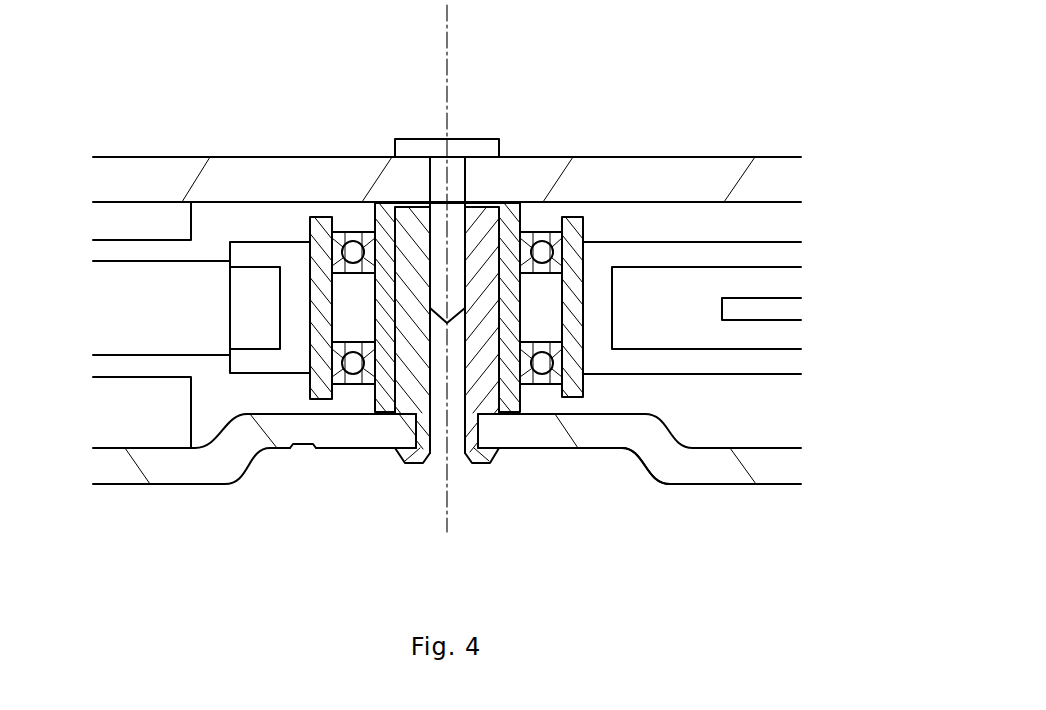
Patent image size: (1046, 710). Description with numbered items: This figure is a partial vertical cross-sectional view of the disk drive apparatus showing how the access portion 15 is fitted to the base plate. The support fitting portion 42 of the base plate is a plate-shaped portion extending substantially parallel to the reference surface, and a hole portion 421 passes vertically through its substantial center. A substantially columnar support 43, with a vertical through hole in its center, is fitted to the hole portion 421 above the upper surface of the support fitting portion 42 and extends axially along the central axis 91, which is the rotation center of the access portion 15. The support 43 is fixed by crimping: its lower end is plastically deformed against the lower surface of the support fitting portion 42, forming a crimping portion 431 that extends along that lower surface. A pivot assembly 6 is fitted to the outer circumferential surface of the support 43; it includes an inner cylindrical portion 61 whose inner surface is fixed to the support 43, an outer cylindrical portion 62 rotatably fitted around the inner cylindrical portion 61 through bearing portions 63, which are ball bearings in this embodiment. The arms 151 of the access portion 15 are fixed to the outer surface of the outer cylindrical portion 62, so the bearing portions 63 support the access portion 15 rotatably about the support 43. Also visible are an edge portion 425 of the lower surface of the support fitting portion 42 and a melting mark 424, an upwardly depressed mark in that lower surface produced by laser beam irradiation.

The pivot assembly 6 is at (426, 223).
The inner cylindrical portion 61 is at (387, 230).
The outer cylindrical portion 62 is at (318, 238).
The bearing portions 63 is at (355, 238).
The central axis 91 is at (445, 52).
The support 43 is at (460, 315).
The crimping portion 431 is at (476, 456).
The access portion 15 is at (452, 260).
The arms 151 is at (670, 255).
The support fitting portion 42 is at (447, 499).
The hole portion 421 is at (442, 442).
The melting mark 424 is at (305, 456).
The edge portion 425 is at (630, 452).